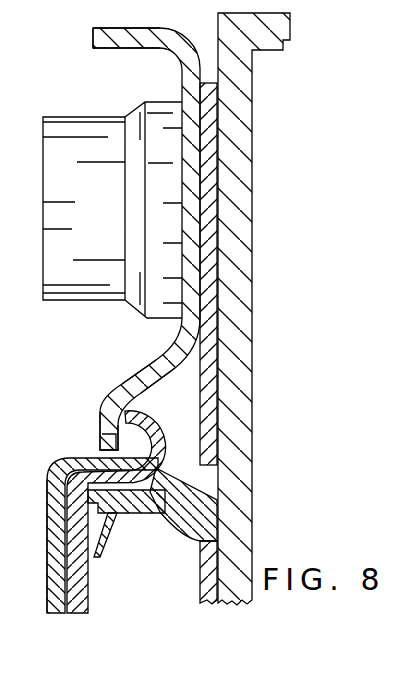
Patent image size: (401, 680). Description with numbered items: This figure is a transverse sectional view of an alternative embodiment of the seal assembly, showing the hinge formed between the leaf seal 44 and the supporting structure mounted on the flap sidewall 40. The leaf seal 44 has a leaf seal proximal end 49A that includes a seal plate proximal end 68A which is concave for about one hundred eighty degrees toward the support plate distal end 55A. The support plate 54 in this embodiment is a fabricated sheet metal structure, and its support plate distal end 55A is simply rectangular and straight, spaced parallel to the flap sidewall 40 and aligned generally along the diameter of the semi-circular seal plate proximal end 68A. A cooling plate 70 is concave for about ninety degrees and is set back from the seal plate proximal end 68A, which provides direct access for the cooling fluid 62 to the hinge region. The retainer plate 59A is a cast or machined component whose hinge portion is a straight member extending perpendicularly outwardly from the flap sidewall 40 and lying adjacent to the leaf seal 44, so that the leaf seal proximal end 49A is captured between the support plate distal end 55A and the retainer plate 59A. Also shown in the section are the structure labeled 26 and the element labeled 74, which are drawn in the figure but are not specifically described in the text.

The support wall 26 is at (288, 41).
The flap sidewall 40 is at (218, 27).
The support plate 54 is at (131, 48).
The support plate distal end 55A is at (97, 425).
The seal plate proximal end 68A is at (147, 367).
The cooling fluid 62 is at (167, 408).
The cooling plate 70 is at (250, 473).
The leaf seal proximal end 49A is at (53, 473).
The leaf seal 44 is at (48, 579).
The sealing lip 74 is at (100, 540).
The retainer plate 59A is at (183, 527).